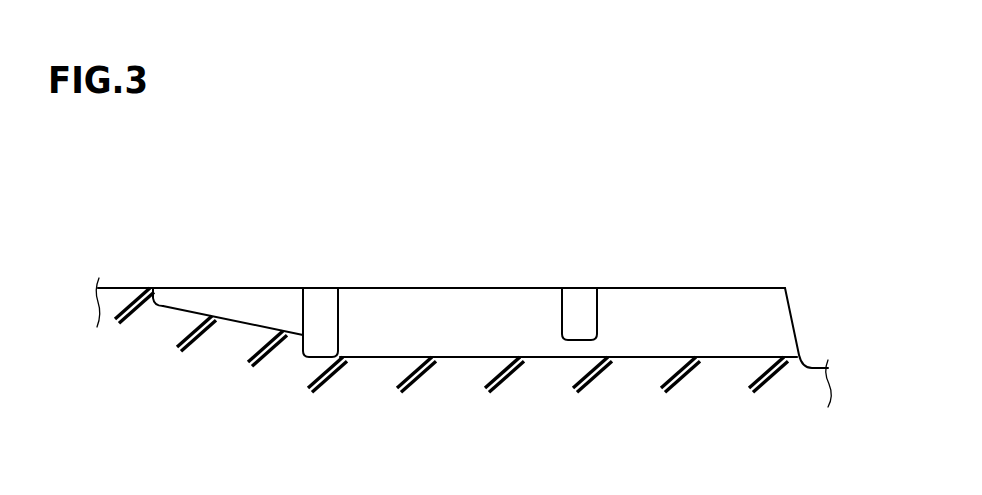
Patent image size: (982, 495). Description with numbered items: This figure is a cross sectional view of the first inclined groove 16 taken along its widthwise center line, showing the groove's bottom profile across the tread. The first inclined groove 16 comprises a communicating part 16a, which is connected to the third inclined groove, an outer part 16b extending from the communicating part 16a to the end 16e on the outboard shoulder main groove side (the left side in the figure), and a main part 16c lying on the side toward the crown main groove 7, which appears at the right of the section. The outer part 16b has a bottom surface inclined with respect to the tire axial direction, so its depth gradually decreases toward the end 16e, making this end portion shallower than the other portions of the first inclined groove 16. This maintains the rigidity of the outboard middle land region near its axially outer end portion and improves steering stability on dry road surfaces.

The first inclined groove 16 is at (667, 278).
The communicating part 16a is at (320, 323).
The outer part 16b is at (240, 312).
The main part 16c is at (578, 325).
The end 16e is at (153, 288).
The crown main groove 7 is at (813, 340).